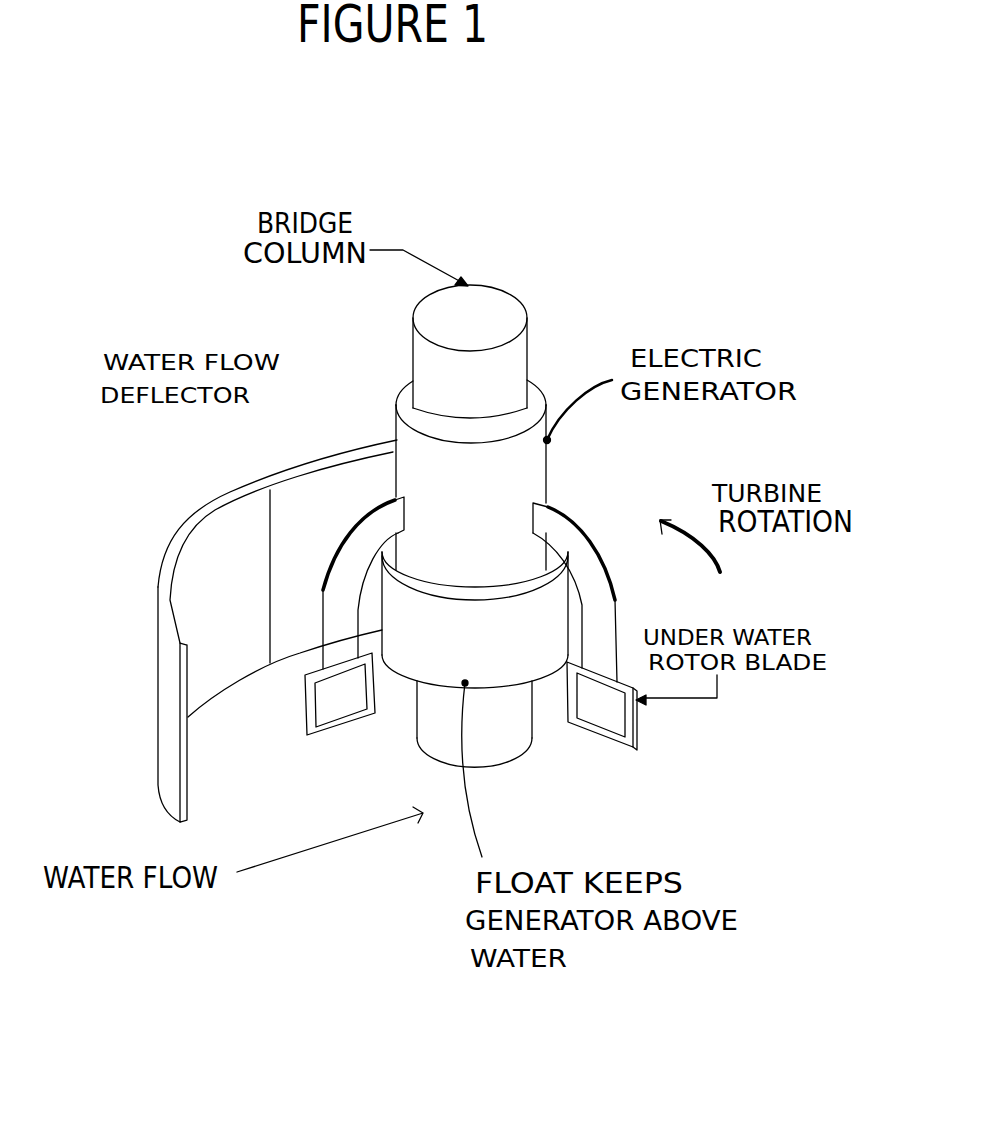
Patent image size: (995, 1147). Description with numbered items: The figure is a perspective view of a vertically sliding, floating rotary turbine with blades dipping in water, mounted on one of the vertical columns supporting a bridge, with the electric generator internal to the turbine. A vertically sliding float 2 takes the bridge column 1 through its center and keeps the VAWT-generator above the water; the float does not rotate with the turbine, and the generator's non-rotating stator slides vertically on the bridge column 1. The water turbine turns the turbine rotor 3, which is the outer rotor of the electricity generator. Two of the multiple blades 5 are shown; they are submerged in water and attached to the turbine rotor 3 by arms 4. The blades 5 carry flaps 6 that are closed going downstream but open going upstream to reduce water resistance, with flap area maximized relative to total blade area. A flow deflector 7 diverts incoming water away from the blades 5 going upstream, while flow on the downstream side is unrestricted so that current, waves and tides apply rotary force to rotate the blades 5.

The bridge column 1 is at (498, 378).
The vertically sliding float 2 is at (500, 643).
The turbine rotor 3 is at (485, 485).
The arms 4 is at (593, 573).
The blades 5 is at (303, 743).
The flaps 6 is at (602, 710).
The flow deflector 7 is at (240, 542).